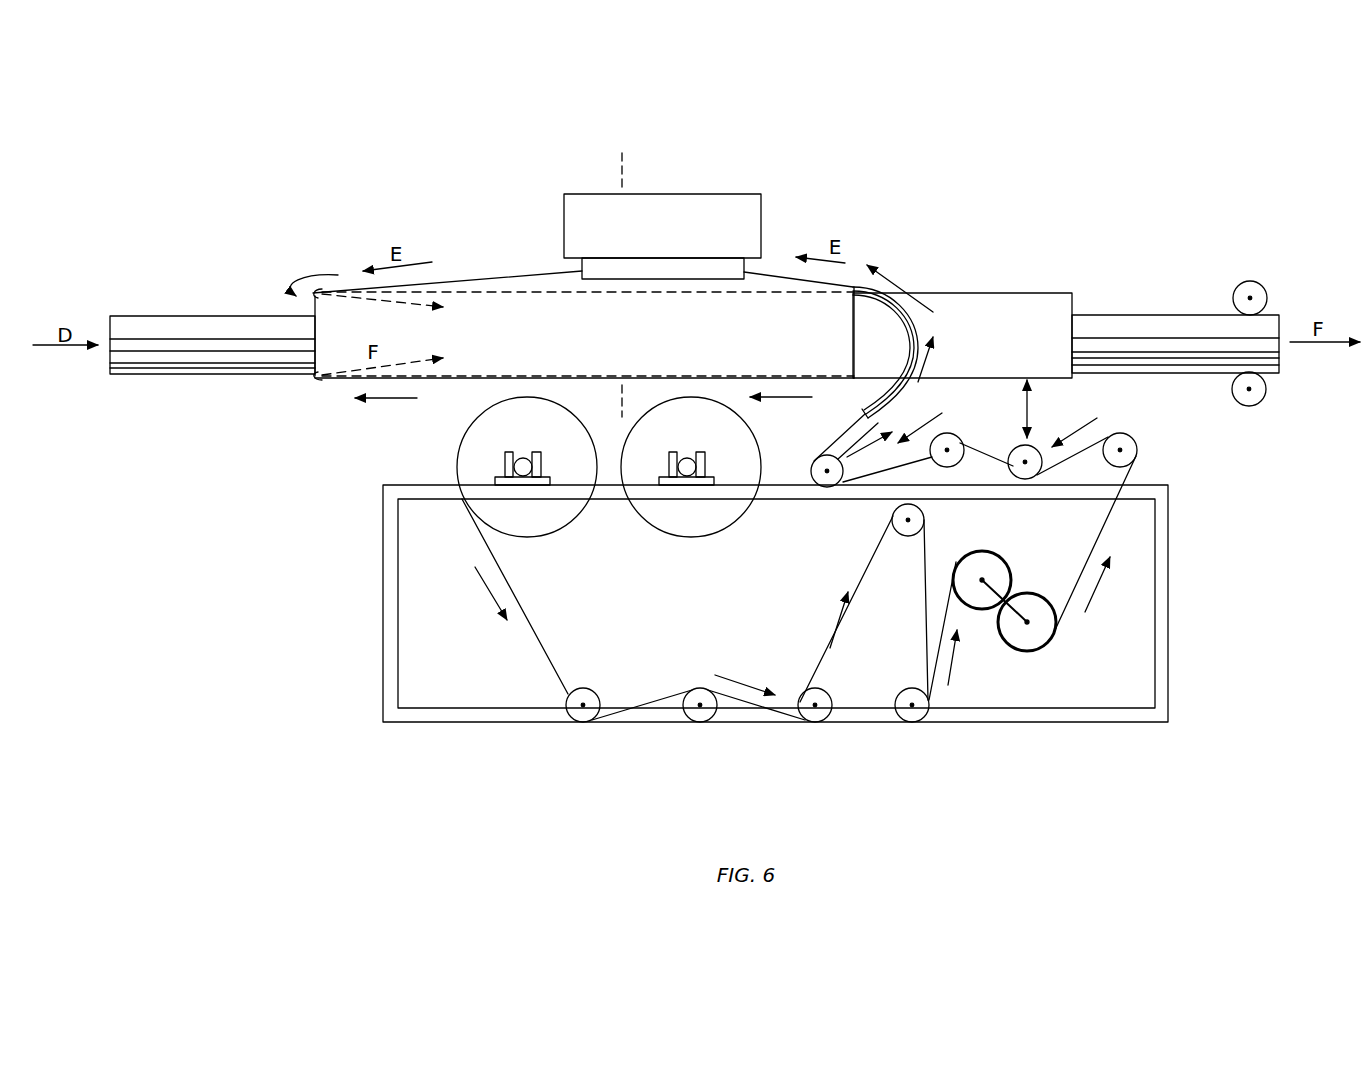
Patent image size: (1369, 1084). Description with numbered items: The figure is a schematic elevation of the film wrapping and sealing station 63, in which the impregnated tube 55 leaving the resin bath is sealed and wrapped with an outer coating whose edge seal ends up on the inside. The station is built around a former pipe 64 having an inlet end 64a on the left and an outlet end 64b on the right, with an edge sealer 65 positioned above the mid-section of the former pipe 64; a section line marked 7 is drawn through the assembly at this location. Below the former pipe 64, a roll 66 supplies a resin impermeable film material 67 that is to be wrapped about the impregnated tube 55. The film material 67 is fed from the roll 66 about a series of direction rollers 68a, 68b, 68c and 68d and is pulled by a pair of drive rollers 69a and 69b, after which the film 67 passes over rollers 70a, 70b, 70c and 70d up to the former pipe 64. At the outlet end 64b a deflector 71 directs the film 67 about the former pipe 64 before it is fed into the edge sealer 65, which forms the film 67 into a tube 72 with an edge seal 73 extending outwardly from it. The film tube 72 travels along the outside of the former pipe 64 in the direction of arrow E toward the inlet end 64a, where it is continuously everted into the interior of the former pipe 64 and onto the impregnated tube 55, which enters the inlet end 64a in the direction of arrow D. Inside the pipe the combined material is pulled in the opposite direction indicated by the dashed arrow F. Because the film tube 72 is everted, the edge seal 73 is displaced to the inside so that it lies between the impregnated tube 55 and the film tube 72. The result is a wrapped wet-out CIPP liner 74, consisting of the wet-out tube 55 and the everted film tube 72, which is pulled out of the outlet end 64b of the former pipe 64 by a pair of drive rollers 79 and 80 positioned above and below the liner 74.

The section line 7- 7 is at (622, 159).
The impregnated tube 55 is at (177, 374).
The film wrapping and sealing station 63 is at (452, 222).
The former pipe 64 is at (583, 349).
The inlet end 64a is at (322, 380).
The outlet end 64b is at (1010, 312).
The edge sealer 65 is at (730, 225).
The roll 66 is at (470, 472).
The resin impermeable film material 67 is at (537, 648).
The direction roller 68a is at (583, 722).
The direction roller 68b is at (700, 722).
The direction roller 68c is at (815, 722).
The direction roller 68d is at (893, 517).
The drive roller 69a is at (990, 565).
The drive roller 69b is at (1043, 630).
The roller 70a is at (1137, 449).
The roller 70b is at (1012, 478).
The roller 70c is at (950, 440).
The roller 70d is at (815, 467).
The deflector 71 is at (882, 403).
The tube 72 is at (498, 283).
The edge seal 73 is at (525, 267).
The wrapped wet-out CIPP liner 74 is at (1146, 312).
The drive roller 79 is at (1253, 398).
The drive roller 80 is at (1250, 280).